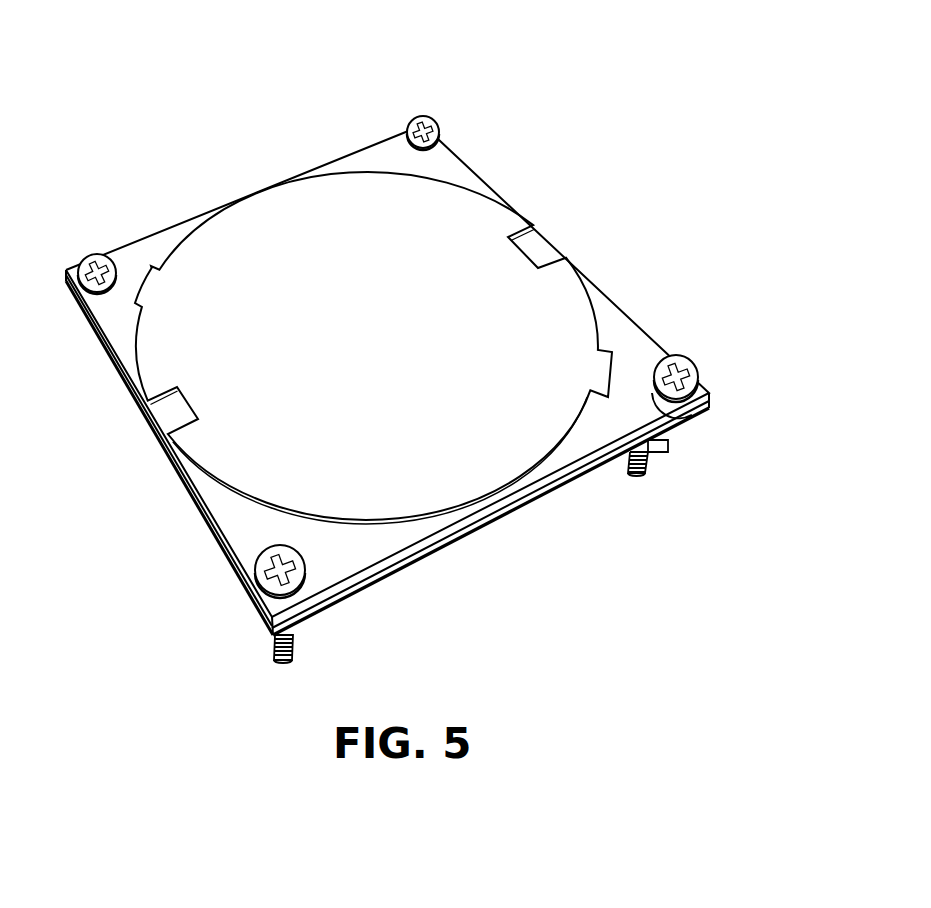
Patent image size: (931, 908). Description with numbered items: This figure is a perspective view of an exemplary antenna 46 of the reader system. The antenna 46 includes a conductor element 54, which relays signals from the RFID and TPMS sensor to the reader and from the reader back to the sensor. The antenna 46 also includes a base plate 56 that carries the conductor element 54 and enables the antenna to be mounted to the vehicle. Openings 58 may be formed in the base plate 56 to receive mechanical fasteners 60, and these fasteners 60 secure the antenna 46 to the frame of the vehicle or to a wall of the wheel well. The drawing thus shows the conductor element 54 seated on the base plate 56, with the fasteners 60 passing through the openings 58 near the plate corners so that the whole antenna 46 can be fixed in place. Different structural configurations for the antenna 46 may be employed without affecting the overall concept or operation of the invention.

The antenna 46 is at (380, 140).
The conductor element 54 is at (465, 217).
The base plate 56 is at (632, 348).
The mechanical fasteners 60 is at (688, 372).
The openings 58 is at (712, 400).